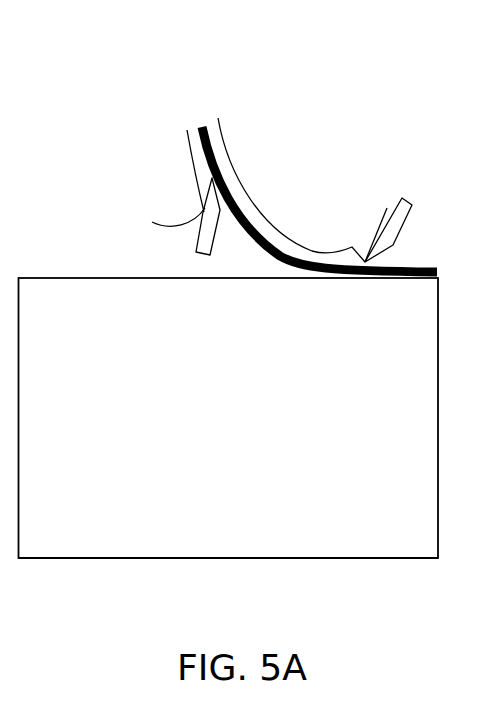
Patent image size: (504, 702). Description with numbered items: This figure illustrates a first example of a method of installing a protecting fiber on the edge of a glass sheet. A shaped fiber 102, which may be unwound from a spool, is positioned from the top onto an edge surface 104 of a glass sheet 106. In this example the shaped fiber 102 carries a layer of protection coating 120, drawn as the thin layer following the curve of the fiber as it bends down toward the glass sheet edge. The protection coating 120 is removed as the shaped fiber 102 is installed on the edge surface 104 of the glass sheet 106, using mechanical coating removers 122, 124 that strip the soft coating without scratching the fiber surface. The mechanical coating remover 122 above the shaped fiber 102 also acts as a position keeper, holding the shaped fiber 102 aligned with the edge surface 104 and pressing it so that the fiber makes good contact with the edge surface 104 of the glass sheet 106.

The shaped fiber 102 is at (207, 128).
The edge surface of glass sheet 104 is at (90, 277).
The glass sheet 106 is at (233, 541).
The protective coating 120 is at (197, 150).
The mechanical remover 122 is at (407, 198).
The mechanical remover 124 is at (198, 233).